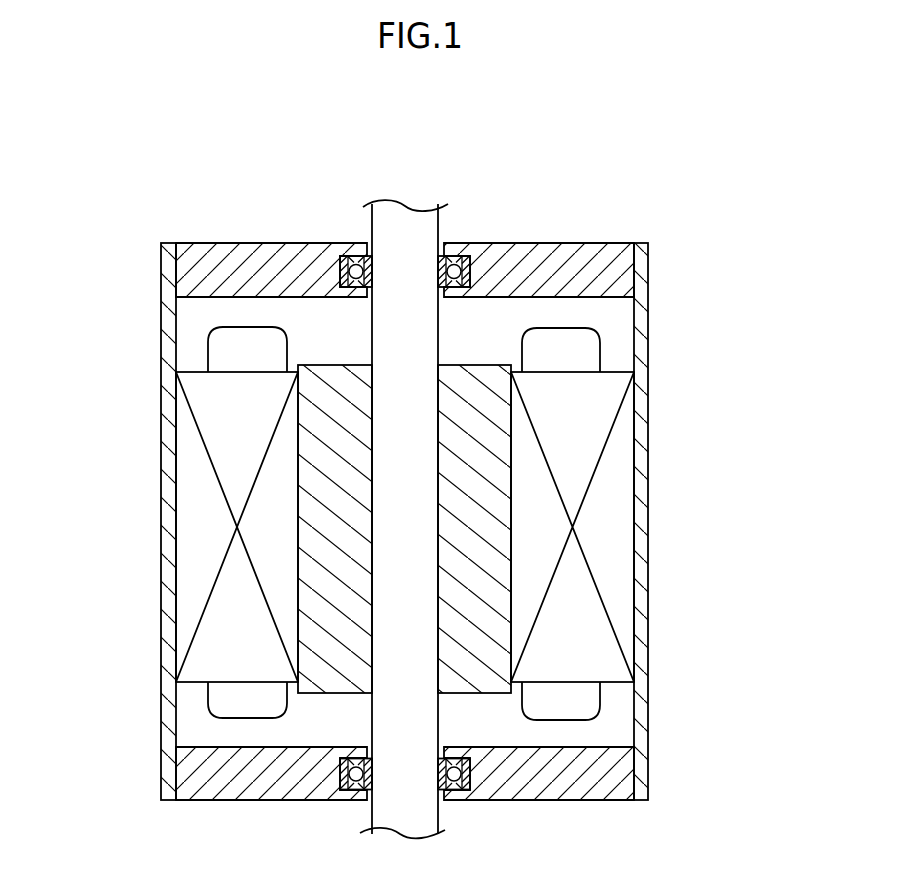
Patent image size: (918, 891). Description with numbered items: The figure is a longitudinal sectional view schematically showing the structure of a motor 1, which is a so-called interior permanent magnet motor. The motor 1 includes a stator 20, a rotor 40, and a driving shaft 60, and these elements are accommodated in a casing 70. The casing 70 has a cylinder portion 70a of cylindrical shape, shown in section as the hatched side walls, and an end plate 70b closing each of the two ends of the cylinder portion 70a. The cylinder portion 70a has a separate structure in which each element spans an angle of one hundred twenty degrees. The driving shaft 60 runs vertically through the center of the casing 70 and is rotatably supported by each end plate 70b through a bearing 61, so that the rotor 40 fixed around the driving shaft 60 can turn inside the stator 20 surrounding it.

The motor 1 is at (657, 145).
The stator 20 is at (610, 503).
The rotor 40 is at (309, 560).
The driving shaft 60 is at (405, 222).
The bearing 61 is at (350, 246).
The casing 70 is at (159, 315).
The cylinder portion 70a is at (648, 588).
The end plate 70b is at (583, 250).